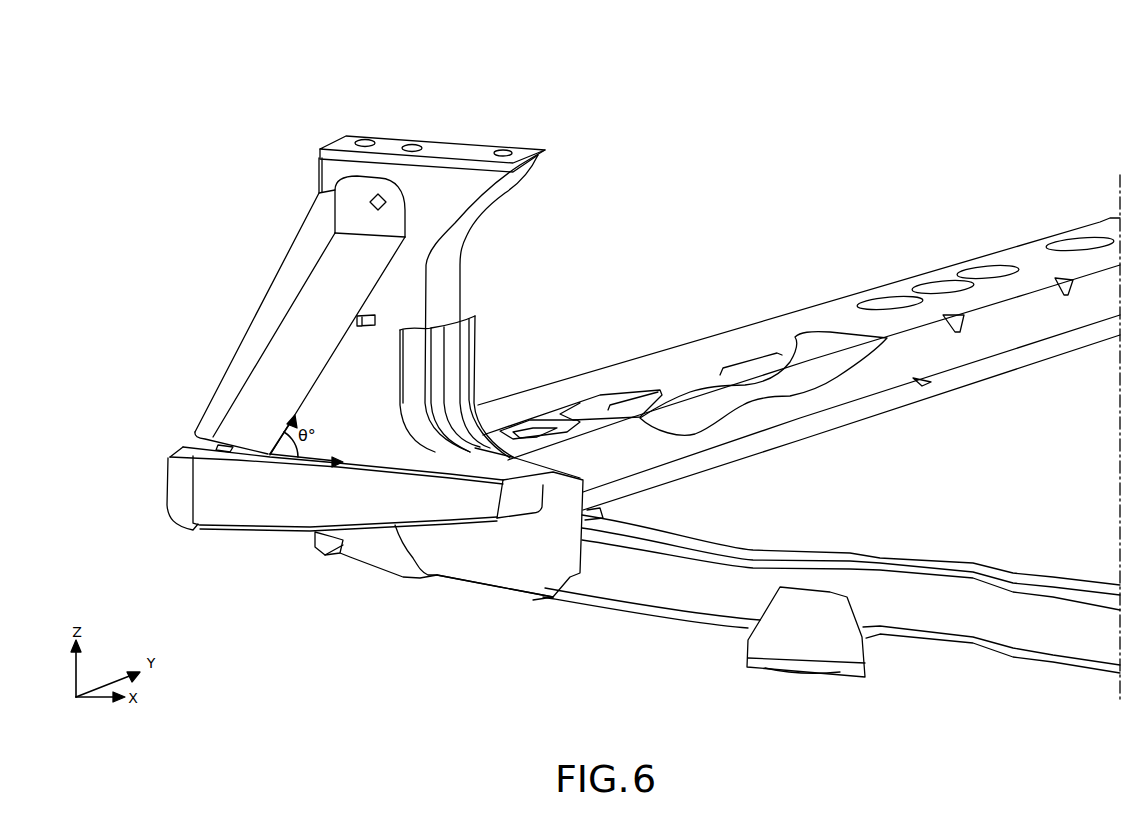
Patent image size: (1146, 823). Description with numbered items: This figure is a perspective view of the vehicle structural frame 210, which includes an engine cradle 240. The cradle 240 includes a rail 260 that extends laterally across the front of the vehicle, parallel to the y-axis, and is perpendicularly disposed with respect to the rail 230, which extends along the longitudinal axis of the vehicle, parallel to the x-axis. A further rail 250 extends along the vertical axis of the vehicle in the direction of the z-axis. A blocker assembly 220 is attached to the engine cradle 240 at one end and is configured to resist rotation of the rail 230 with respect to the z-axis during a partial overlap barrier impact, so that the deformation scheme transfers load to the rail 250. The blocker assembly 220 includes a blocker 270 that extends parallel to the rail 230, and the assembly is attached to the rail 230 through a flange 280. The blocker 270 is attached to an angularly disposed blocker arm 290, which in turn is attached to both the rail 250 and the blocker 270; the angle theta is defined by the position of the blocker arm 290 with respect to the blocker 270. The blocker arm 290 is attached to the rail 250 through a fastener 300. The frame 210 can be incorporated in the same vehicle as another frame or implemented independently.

The vehicle structural frame 210 is at (1117, 95).
The blocker assembly 220 is at (238, 543).
The rail 230 is at (752, 557).
The engine cradle 240 is at (670, 560).
The rail 250 is at (438, 302).
The rail 260 is at (928, 272).
The blocker 270 is at (375, 502).
The flange 280 is at (512, 563).
The blocker arm 290 is at (273, 310).
The fastener 300 is at (384, 197).